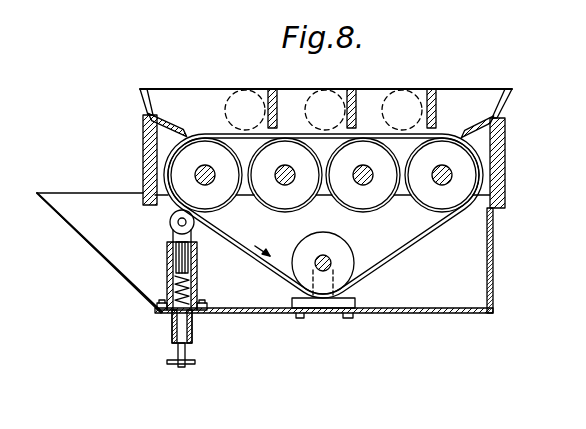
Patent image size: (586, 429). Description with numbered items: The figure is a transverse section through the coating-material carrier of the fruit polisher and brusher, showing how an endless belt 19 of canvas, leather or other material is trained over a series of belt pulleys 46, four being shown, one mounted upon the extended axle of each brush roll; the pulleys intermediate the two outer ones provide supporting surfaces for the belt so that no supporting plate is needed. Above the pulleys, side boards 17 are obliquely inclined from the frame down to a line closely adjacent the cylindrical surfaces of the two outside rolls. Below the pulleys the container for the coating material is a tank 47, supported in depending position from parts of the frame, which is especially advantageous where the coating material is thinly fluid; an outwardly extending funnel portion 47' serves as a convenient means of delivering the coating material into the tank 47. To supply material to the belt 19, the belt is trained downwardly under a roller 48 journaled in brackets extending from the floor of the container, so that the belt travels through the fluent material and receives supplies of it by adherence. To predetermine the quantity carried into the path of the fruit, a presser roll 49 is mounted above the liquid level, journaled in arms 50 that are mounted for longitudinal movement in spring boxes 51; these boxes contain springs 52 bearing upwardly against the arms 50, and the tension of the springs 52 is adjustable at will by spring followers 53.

The side boards 17 is at (173, 124).
The endless belt 19 is at (420, 239).
The belt pulleys 46 is at (222, 200).
The tank 47 is at (510, 215).
The funnel portion 47' is at (96, 253).
The roller 48 is at (350, 255).
The presser roll 49 is at (170, 222).
The arms 50 is at (184, 238).
The spring boxes 51 is at (167, 286).
The springs 52 is at (195, 287).
The spring followers 53 is at (176, 311).